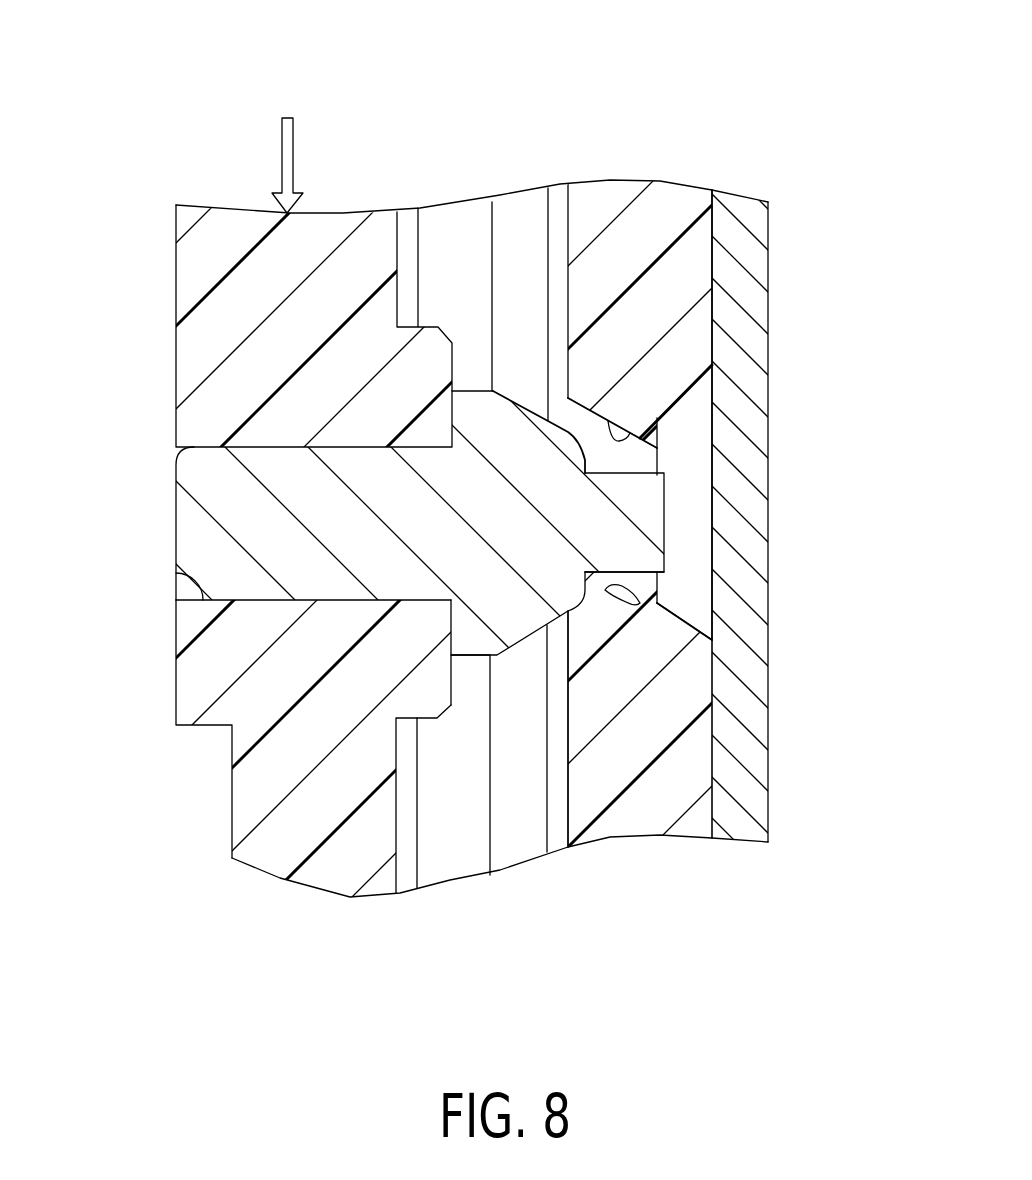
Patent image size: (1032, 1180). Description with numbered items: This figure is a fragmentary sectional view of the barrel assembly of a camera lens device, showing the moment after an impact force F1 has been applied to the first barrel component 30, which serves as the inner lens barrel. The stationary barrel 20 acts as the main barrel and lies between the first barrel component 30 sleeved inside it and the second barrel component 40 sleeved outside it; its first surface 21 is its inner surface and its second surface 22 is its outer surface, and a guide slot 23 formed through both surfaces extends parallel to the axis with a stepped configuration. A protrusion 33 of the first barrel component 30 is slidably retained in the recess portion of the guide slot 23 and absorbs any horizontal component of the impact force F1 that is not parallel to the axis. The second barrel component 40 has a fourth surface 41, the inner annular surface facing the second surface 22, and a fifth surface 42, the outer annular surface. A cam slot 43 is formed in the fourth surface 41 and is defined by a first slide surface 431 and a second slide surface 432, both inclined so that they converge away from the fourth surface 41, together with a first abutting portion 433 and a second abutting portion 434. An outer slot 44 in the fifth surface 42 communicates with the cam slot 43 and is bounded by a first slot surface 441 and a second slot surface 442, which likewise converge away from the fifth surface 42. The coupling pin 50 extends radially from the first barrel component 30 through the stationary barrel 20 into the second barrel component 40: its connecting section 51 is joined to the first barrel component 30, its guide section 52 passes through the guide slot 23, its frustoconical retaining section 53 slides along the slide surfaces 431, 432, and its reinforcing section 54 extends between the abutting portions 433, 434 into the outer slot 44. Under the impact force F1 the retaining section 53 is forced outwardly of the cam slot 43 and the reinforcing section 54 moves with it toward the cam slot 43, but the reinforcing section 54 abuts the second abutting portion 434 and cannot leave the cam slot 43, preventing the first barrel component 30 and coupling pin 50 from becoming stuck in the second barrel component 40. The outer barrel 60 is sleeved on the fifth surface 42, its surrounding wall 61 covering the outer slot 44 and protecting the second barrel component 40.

The stationary barrel 20 is at (499, 893).
The first surface 21 is at (415, 833).
The second surface 22 is at (538, 815).
The guide slot 23 is at (515, 218).
The first barrel component 30 is at (344, 196).
The protrusion 33 is at (423, 695).
The second barrel component 40 is at (606, 165).
The fourth surface 41 is at (593, 800).
The fifth surface 42 is at (714, 255).
The cam slot 43 is at (640, 462).
The first slide surface 431 is at (630, 435).
The second slide surface 432 is at (642, 604).
The first abutting portion 433 is at (662, 440).
The second abutting portion 434 is at (672, 575).
The outer slot 44 is at (680, 505).
The first slot surface 441 is at (690, 400).
The second slot surface 442 is at (684, 618).
The coupling pin 50 is at (163, 490).
The connecting section 51 is at (285, 583).
The guide section 52 is at (473, 410).
The retaining section 53 is at (521, 432).
The reinforcing section 54 is at (650, 537).
The outer barrel 60 is at (784, 256).
The surrounding wall 61 is at (745, 322).
The impact force F1 is at (288, 145).